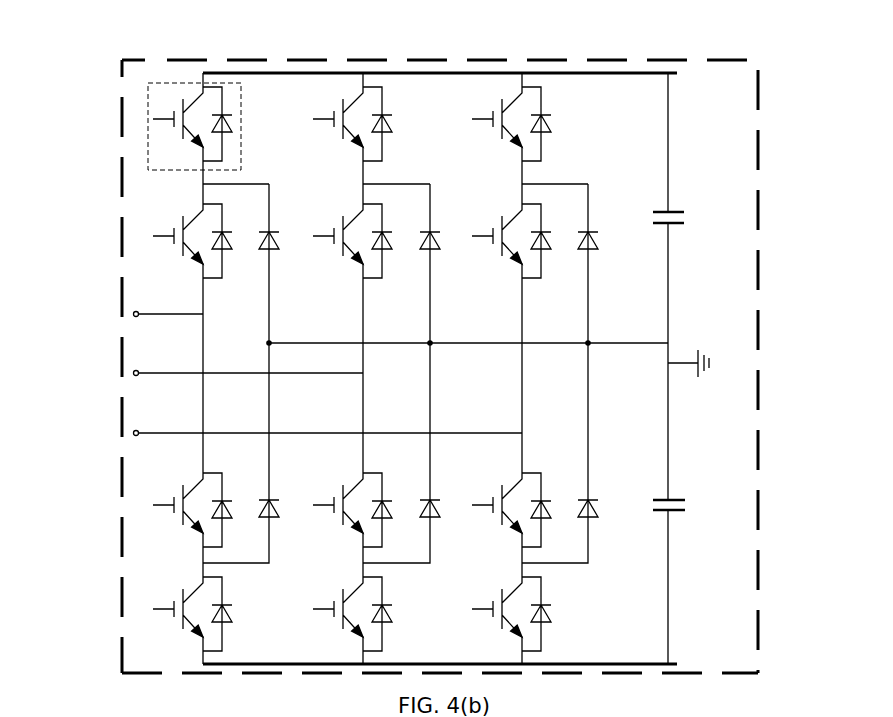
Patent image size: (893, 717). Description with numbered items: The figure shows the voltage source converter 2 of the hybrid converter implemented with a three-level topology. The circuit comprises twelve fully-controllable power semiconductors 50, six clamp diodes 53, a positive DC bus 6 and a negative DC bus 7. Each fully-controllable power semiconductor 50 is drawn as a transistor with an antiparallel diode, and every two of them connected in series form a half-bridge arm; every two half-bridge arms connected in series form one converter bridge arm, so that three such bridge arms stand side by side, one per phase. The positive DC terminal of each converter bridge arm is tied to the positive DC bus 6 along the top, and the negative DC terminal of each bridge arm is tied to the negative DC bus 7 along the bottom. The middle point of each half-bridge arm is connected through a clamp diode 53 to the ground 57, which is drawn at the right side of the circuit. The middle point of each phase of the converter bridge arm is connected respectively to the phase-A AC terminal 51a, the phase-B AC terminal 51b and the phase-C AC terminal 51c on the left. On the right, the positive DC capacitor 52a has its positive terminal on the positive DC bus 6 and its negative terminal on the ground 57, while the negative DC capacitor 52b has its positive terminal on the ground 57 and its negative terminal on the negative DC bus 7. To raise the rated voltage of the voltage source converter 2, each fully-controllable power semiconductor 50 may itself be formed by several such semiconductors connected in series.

The voltage source converter 2 is at (757, 345).
The positive DC bus 6 is at (655, 72).
The negative DC bus 7 is at (601, 663).
The fully-controllable power semiconductor 50 is at (148, 138).
The phase-A AC terminal 51a is at (133, 314).
The phase-B AC terminal 51b is at (133, 373).
The phase-C AC terminal 51c is at (133, 434).
The positive DC capacitor 52a is at (684, 221).
The negative DC capacitor 52b is at (685, 508).
The clamp diode 53 is at (274, 249).
The ground 57 is at (704, 380).